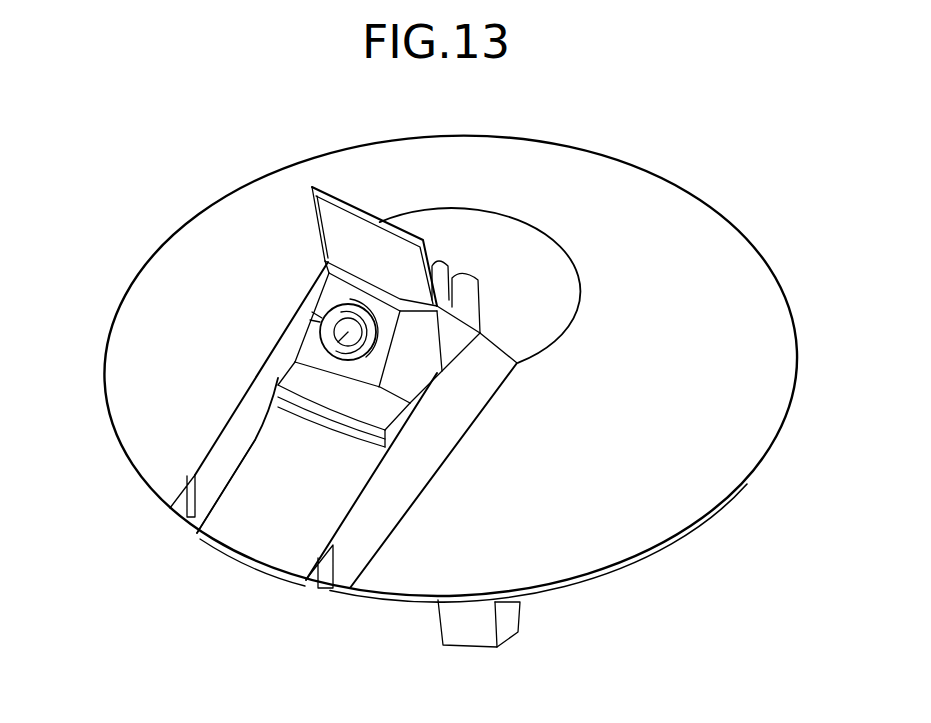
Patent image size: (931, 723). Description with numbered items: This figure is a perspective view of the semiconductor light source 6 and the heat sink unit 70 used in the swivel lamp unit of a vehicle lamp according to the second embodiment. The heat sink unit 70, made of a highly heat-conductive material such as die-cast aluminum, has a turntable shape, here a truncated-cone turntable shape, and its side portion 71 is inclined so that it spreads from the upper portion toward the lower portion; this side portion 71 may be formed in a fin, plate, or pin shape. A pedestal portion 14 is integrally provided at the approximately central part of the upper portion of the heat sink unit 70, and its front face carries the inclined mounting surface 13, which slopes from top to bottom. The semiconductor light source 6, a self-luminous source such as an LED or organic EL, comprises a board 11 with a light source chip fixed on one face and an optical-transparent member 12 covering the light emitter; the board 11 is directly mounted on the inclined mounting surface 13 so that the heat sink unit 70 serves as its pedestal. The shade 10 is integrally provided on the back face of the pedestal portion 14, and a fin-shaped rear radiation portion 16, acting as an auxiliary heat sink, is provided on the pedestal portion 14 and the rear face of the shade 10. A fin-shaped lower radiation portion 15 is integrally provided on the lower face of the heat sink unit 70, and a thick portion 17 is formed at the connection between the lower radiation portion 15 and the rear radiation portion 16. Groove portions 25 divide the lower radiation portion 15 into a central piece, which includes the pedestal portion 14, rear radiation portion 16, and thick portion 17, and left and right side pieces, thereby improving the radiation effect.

The heat sink unit 70 is at (118, 313).
The side portion 71 is at (718, 483).
The groove portions 25 is at (226, 441).
The shade 10 is at (340, 237).
The pedestal portion 14 is at (357, 278).
The rear radiation portion 16 is at (460, 270).
The inclined mounting surface 13 is at (382, 382).
The board 11 is at (345, 330).
The optical-transparent member 12 is at (324, 350).
The semiconductor light source 6 is at (330, 325).
The thick portion 17 is at (327, 398).
The lower radiation portion 15 is at (438, 617).